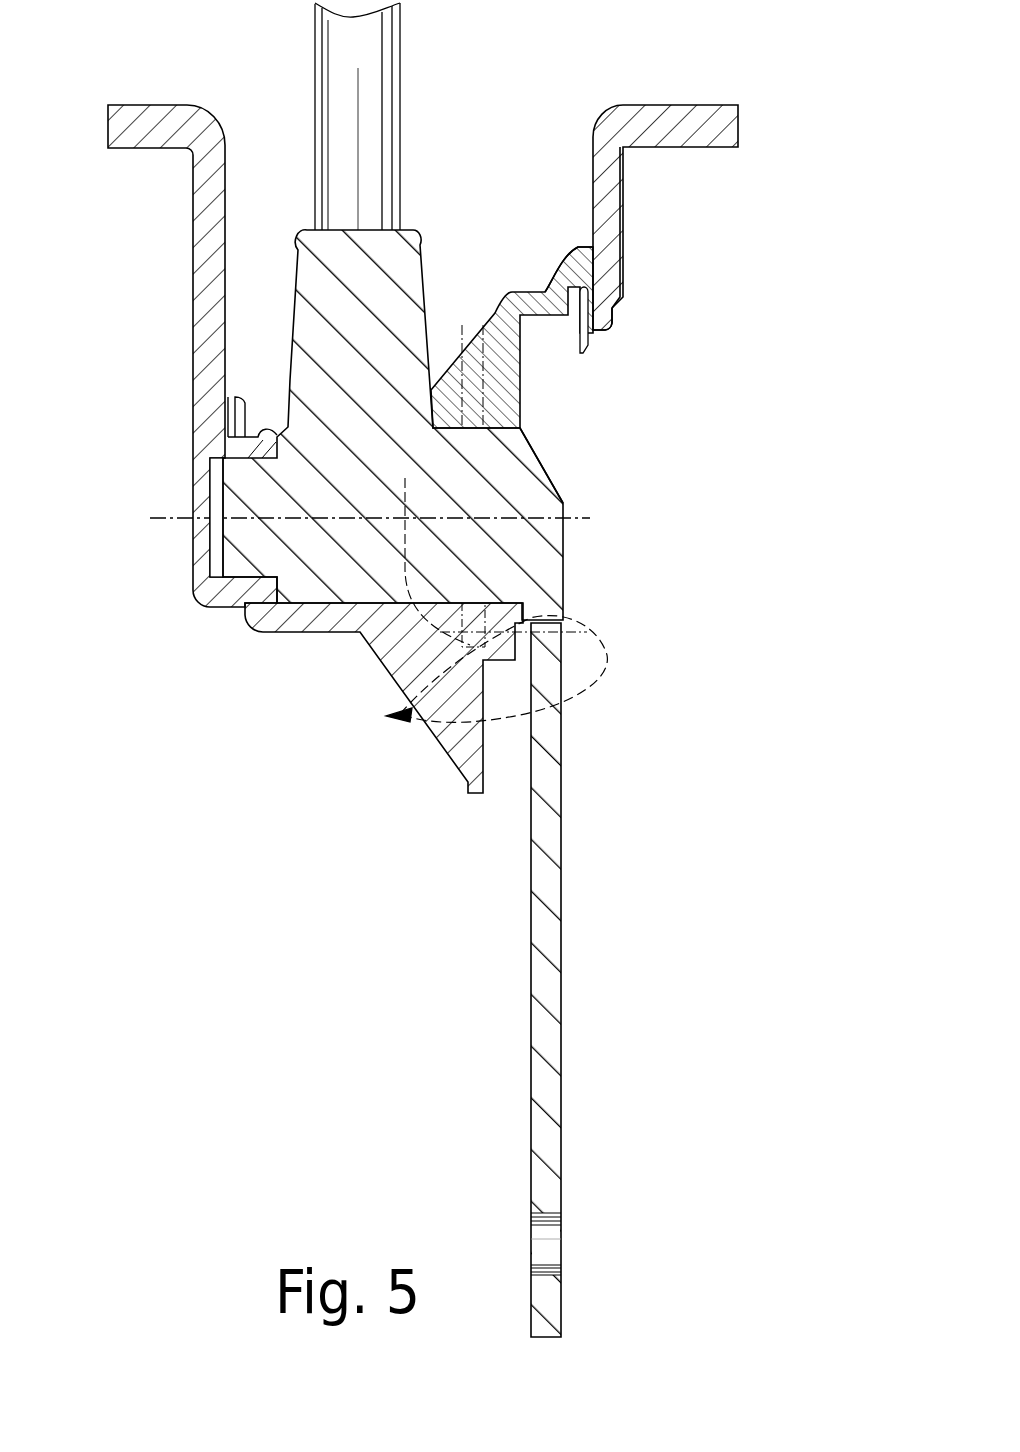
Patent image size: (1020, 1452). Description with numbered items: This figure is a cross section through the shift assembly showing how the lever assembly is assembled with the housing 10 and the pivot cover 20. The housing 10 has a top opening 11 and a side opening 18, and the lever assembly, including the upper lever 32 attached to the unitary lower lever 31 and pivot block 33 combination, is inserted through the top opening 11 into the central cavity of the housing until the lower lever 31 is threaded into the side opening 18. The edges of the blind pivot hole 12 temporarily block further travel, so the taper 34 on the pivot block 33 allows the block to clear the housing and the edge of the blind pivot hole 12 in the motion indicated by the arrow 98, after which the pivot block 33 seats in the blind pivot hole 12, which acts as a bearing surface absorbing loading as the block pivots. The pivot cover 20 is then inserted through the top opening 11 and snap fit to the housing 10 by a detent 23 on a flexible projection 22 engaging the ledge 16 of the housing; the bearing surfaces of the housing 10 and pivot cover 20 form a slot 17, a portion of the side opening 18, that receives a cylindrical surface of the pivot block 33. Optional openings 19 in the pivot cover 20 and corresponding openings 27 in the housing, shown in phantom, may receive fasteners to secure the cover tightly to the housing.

The housing 10 is at (165, 128).
The top opening 11 is at (267, 97).
The blind pivot hole 12 is at (245, 610).
The ledge 16 is at (598, 334).
The slot 17 is at (648, 489).
The side opening 18 is at (715, 388).
The opening 19 is at (510, 292).
The pivot cover 20 is at (558, 256).
The flexible projection 22 is at (579, 325).
The detent 23 is at (592, 345).
The opening 27 is at (550, 613).
The lower lever 31 is at (548, 880).
The upper lever 32 is at (390, 135).
The pivot block 33 is at (410, 353).
The taper 34 is at (537, 460).
The arrow 98 is at (607, 660).